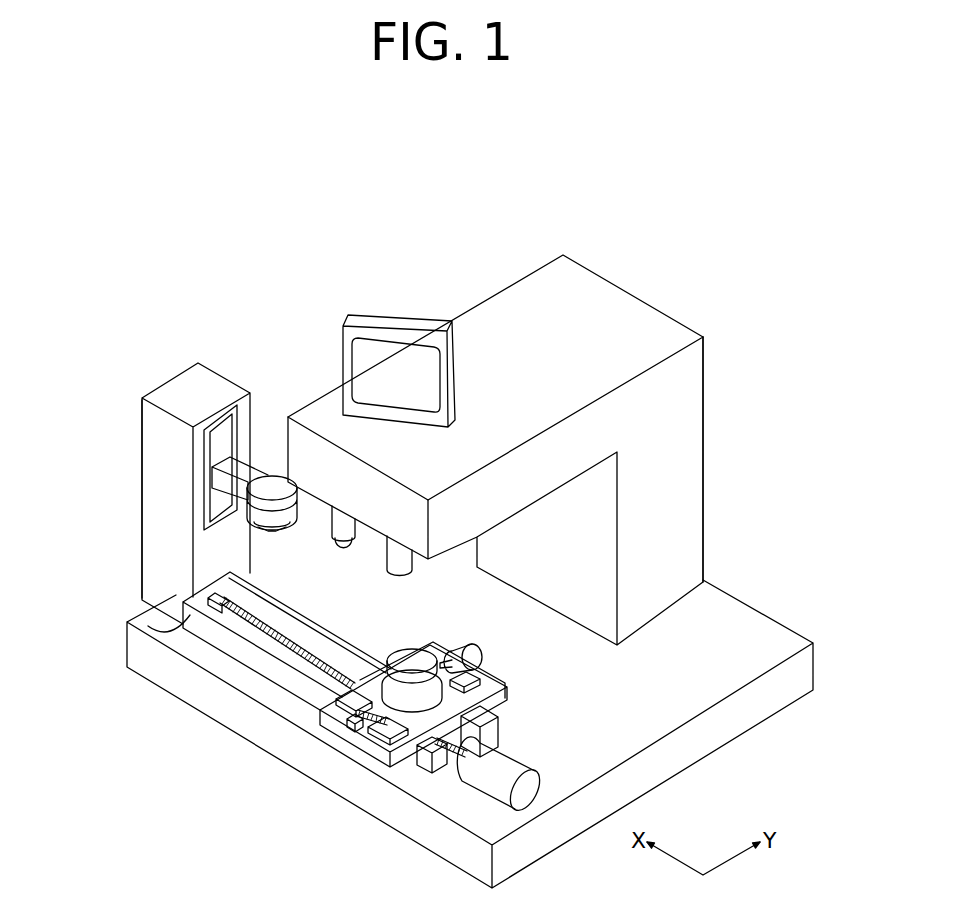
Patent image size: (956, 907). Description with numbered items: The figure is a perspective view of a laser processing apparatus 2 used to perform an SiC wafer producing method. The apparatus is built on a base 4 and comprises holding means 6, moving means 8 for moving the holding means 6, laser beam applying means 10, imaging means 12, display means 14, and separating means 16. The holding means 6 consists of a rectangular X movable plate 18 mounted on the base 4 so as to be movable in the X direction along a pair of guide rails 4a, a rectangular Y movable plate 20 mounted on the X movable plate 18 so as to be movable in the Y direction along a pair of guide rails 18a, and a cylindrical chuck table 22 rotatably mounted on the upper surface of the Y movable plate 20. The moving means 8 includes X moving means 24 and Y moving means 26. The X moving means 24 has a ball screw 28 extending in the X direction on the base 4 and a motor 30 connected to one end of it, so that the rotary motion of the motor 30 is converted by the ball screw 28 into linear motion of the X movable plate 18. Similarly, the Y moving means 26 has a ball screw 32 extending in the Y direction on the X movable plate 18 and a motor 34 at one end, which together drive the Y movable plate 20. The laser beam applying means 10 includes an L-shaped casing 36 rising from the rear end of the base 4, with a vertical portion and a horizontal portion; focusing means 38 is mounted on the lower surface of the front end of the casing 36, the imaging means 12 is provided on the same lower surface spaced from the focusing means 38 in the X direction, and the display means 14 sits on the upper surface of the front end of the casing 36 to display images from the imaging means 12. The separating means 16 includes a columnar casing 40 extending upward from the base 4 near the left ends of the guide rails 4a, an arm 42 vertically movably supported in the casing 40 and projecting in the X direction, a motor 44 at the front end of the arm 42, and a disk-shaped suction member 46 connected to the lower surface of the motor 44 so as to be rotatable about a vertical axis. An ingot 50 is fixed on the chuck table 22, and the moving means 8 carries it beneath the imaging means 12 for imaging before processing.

The laser processing apparatus 2 is at (233, 277).
The base 4 is at (740, 625).
The guide rails 4a is at (232, 587).
The holding means 6 is at (262, 820).
The moving means 8 is at (585, 647).
The laser beam applying means 10 is at (497, 290).
The imaging means 12 is at (387, 563).
The display means 14 is at (412, 327).
The separating means 16 is at (227, 377).
The X movable plate 18 is at (375, 753).
The guide rails 18a is at (330, 715).
The Y movable plate 20 is at (428, 700).
The chuck table 22 is at (437, 693).
The X moving means 24 is at (499, 756).
The Y moving means 26 is at (510, 661).
The ball screw 28 is at (480, 714).
The motor 30 is at (501, 771).
The ball screw 32 is at (490, 675).
The motor 34 is at (480, 653).
The L-shaped casing 36 is at (693, 460).
The focusing means 38 is at (337, 543).
The columnar casing 40 is at (152, 440).
The arm 42 is at (240, 472).
The motor 44 is at (270, 485).
The suction member 46 is at (255, 533).
The ingot 50 is at (408, 658).